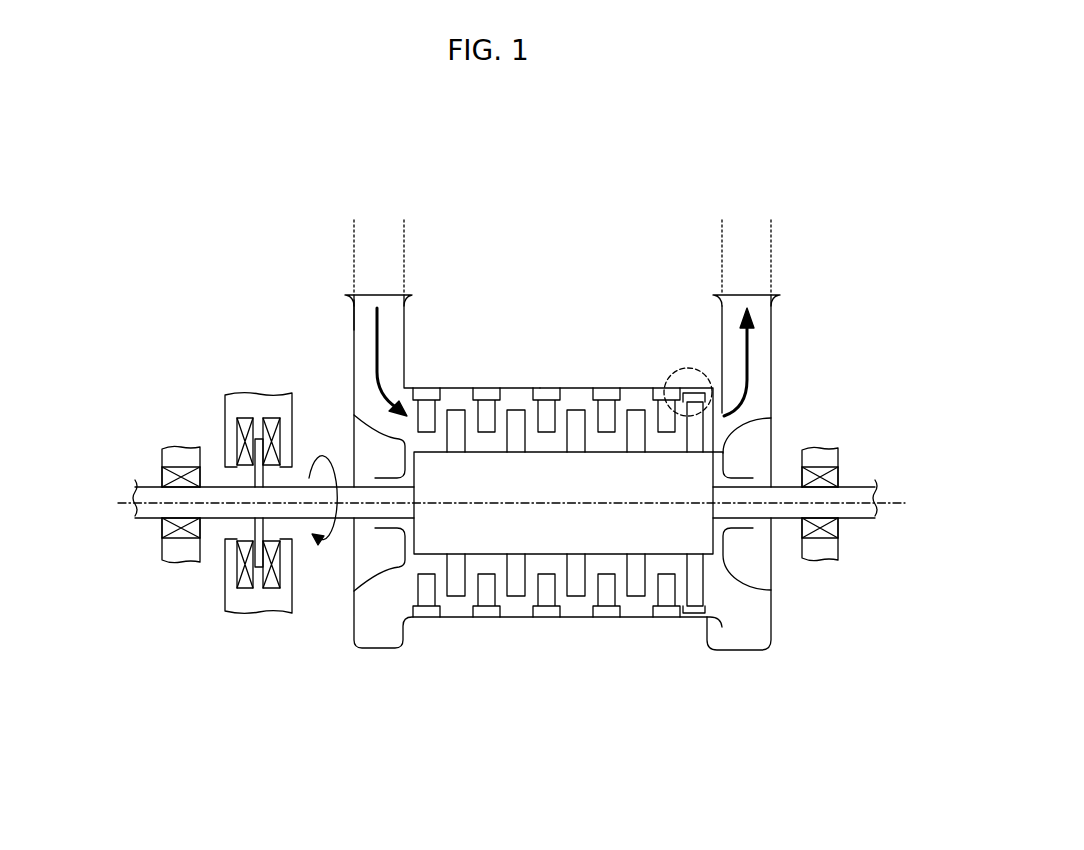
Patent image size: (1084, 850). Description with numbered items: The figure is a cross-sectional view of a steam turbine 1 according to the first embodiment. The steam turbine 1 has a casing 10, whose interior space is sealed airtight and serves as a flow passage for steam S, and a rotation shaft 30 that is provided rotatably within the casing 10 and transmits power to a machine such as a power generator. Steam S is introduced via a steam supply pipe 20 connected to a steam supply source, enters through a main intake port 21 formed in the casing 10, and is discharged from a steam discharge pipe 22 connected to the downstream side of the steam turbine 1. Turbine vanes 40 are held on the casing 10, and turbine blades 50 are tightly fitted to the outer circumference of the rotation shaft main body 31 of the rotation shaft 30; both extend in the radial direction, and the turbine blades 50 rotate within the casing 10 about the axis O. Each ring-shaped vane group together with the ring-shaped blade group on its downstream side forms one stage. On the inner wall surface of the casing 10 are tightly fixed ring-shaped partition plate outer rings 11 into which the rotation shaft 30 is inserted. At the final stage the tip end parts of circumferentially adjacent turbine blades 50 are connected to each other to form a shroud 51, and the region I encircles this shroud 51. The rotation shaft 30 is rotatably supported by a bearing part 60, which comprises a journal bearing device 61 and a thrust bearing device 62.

The steam turbine 1 is at (763, 672).
The casing 10 is at (378, 649).
The partition plate outer rings 11 is at (658, 388).
The steam supply pipe 20 is at (407, 251).
The main intake port 21 is at (355, 322).
The steam discharge pipe 22 is at (772, 251).
The rotation shaft 30 is at (153, 487).
The rotation shaft main body 31 is at (500, 545).
The turbine vanes 40 is at (424, 397).
The turbine blades 50 is at (512, 413).
The shroud 51 is at (693, 392).
The bearing part 60 is at (510, 487).
The journal bearing device 61 is at (178, 568).
The thrust bearing device 62 is at (256, 620).
The region of interest I is at (668, 373).
The steam S is at (373, 357).
The axis O is at (499, 503).